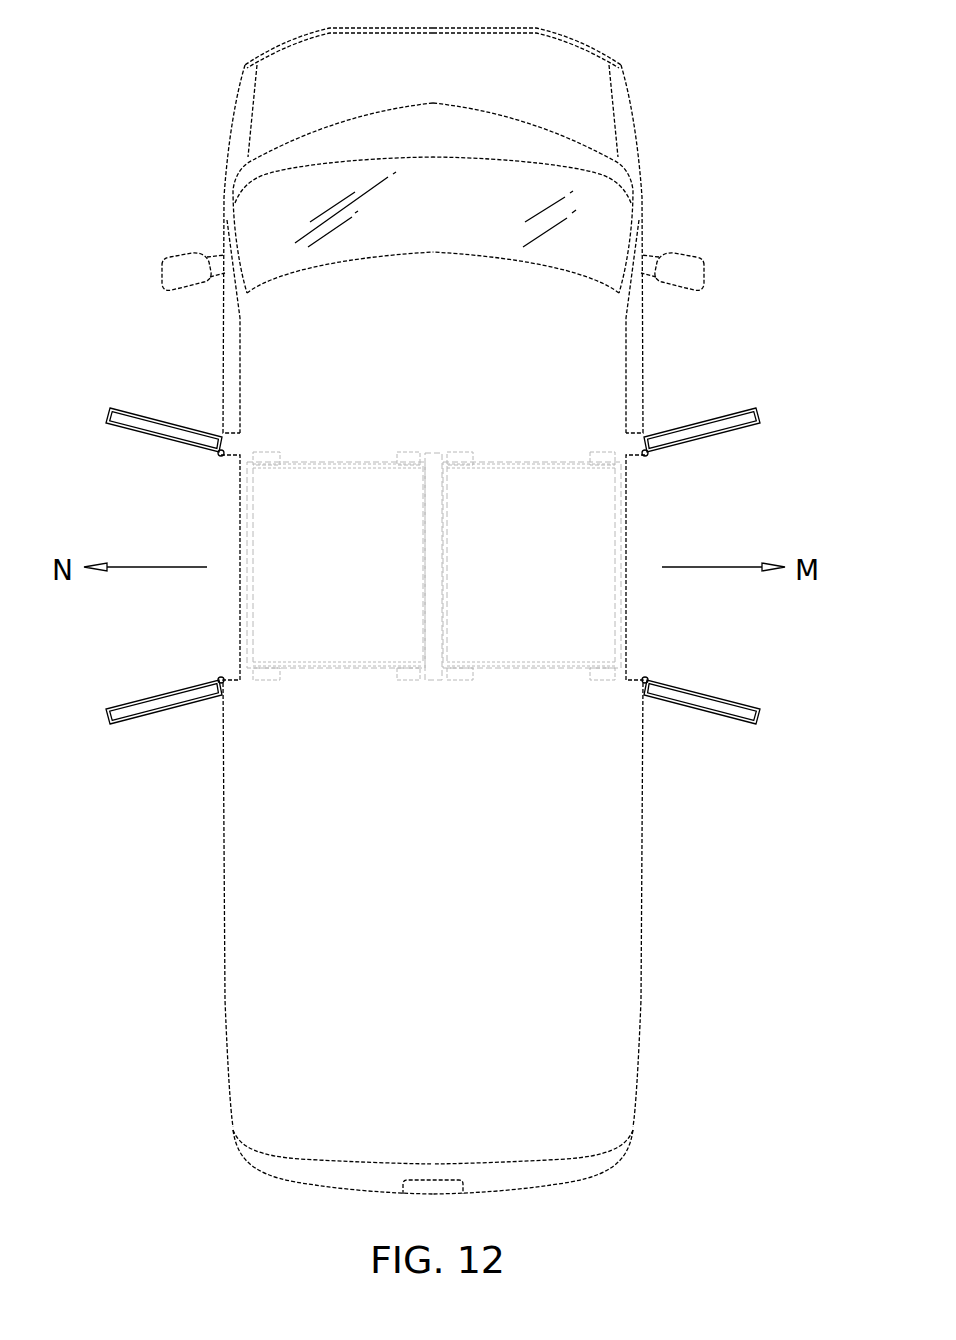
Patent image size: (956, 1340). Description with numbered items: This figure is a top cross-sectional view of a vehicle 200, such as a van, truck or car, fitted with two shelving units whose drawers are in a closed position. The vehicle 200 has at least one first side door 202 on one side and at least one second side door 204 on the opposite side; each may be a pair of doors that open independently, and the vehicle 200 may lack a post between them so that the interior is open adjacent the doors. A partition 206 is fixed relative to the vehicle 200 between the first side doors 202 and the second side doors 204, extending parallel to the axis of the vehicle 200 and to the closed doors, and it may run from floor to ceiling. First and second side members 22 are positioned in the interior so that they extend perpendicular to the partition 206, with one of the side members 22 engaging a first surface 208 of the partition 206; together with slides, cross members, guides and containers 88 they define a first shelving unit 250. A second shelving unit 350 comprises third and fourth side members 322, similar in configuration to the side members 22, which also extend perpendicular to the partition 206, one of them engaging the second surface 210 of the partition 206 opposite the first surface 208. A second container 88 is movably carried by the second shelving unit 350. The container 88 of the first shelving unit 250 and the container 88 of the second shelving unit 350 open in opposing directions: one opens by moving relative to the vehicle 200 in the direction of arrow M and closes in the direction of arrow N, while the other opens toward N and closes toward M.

The vehicle 200 is at (112, 62).
The first side door 202 is at (716, 418).
The second side door 204 is at (150, 418).
The partition 206 is at (434, 680).
The first surface 208 is at (442, 551).
The second surface 210 is at (425, 485).
The side member 22 is at (460, 453).
The side member 322 is at (266, 452).
The container 88 is at (350, 584).
The first shelving unit 250 is at (527, 707).
The second shelving unit 350 is at (336, 706).